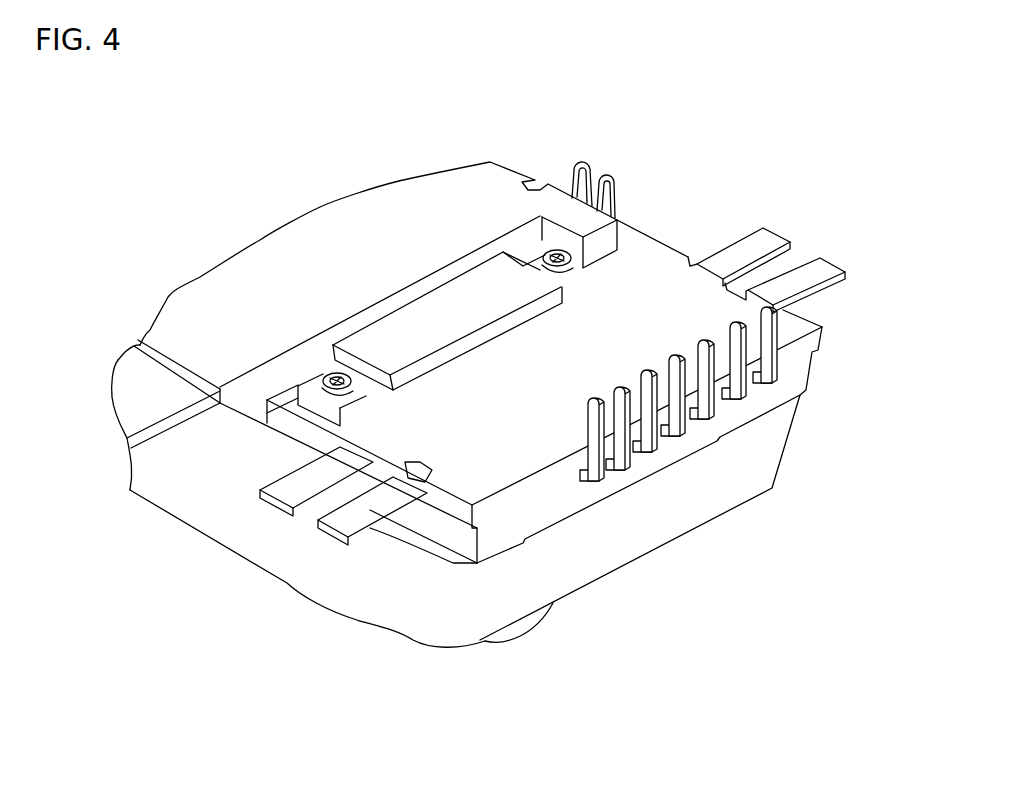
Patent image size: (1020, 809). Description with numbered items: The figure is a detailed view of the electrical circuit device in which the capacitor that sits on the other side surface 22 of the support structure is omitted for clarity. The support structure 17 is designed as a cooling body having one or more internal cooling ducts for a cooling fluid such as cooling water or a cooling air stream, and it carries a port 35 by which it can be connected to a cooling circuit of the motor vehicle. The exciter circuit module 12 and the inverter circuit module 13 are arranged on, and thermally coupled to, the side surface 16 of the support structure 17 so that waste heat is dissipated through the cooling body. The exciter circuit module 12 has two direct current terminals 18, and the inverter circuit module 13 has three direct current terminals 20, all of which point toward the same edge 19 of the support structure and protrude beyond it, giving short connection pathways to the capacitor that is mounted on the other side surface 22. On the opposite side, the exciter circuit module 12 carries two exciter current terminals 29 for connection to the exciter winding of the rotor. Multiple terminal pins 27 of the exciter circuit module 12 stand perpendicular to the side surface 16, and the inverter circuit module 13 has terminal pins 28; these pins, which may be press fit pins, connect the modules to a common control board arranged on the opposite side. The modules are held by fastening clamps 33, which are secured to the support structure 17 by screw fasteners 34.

The exciter circuit module 12 is at (688, 256).
The inverter circuit module 13 is at (478, 185).
The side surface 16 is at (440, 552).
The support structure 17 is at (750, 472).
The direct current terminals 18 is at (325, 532).
The edge 19 is at (397, 540).
The direct current terminals 20 is at (137, 387).
The other side surface 22 is at (410, 612).
The terminal pins 27 is at (790, 347).
The terminal pins 28 is at (610, 184).
The exciter current terminals 29 is at (823, 273).
The fastening clamps 33 is at (622, 225).
The screw fasteners 34 is at (578, 262).
The port 35 is at (530, 628).